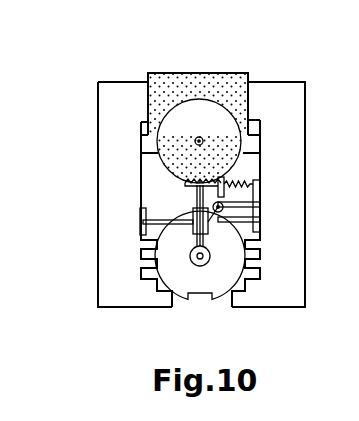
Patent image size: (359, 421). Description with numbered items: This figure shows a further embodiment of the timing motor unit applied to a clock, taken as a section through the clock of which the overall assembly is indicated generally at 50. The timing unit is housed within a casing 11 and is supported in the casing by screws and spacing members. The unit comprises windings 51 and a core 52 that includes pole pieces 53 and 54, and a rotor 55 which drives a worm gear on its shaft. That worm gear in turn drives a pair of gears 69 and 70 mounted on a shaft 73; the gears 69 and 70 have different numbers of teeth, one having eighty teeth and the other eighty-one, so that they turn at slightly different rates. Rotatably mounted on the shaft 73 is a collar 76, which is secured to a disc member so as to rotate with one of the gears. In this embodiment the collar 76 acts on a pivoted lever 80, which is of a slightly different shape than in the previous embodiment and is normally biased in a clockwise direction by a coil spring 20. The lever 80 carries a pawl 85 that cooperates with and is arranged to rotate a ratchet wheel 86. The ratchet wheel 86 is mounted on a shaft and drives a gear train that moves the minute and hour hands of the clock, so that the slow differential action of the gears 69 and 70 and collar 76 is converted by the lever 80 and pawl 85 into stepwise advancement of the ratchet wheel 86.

The casing 11 is at (200, 22).
The coil spring 20 is at (237, 183).
The drive assembly 50 is at (82, 259).
The windings 51 is at (228, 72).
The core 52 is at (292, 137).
The pole piece 53 is at (262, 258).
The pole piece 54 is at (140, 255).
The rotor 55 is at (229, 274).
The gear 69 is at (197, 198).
The gear 70 is at (208, 192).
The shaft 73 is at (160, 218).
The collar 76 is at (220, 214).
The pivoted lever 80 is at (228, 193).
The pawl 85 is at (212, 178).
The ratchet wheel 86 is at (182, 133).